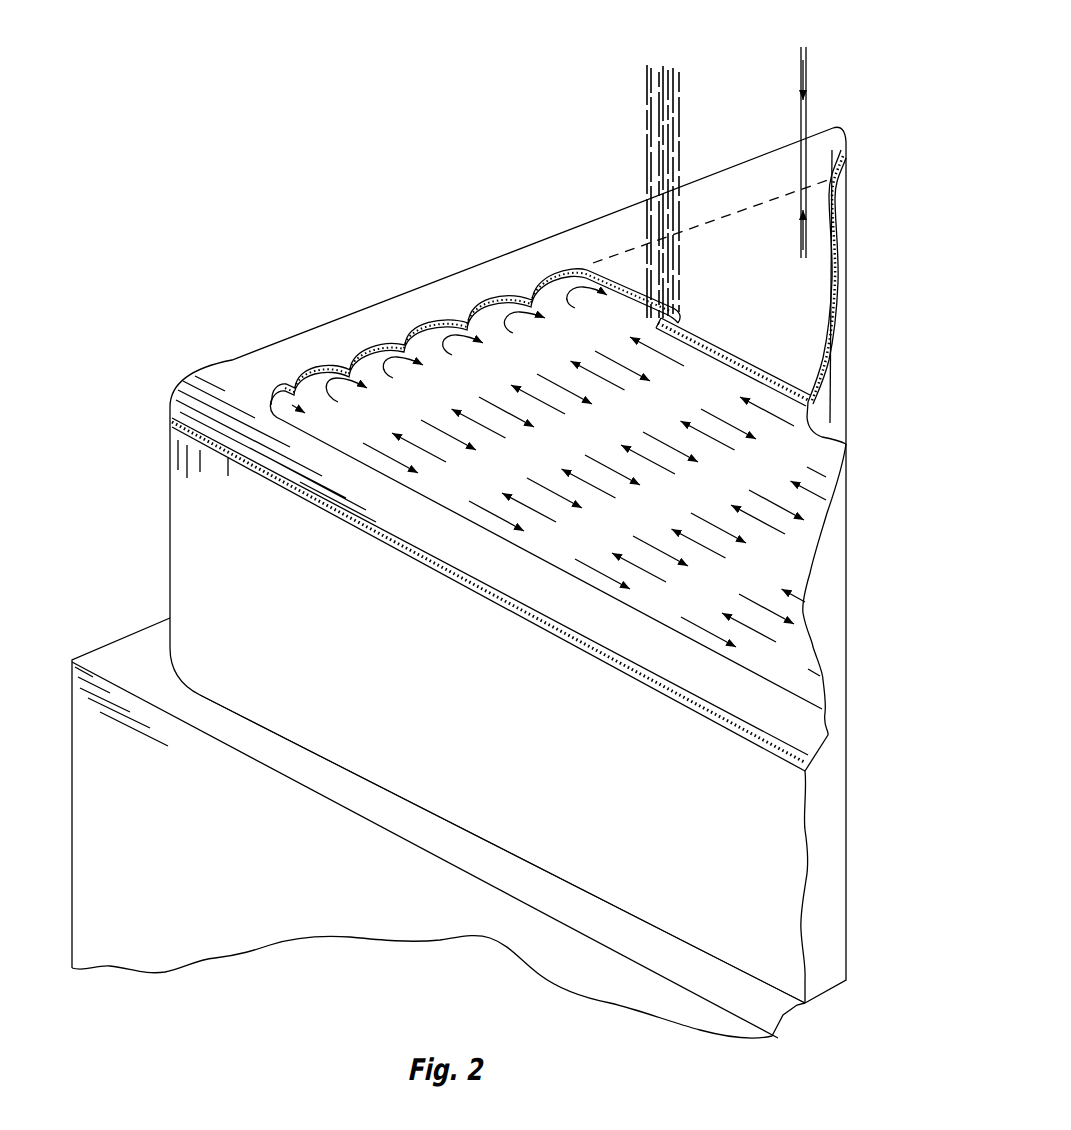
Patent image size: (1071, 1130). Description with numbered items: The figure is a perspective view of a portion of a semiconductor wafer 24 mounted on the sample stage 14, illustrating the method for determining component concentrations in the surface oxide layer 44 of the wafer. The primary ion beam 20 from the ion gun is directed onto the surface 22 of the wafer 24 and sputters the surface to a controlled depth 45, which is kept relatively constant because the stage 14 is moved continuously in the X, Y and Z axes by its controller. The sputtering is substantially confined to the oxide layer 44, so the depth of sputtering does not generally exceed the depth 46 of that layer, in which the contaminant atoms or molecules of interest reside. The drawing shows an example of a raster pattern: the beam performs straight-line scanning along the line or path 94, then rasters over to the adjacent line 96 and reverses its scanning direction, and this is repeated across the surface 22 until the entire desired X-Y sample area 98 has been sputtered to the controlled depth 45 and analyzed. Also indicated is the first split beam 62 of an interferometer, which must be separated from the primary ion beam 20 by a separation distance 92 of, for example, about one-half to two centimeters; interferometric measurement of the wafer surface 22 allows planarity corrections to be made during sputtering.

The sample stage 14 is at (179, 842).
The primary ion beam 20 is at (648, 147).
The surface 22 is at (262, 352).
The semiconductor wafer 24 is at (423, 672).
The surface oxide layer 44 is at (254, 471).
The controlled depth 45 is at (717, 292).
The depth of the surface oxide layer 46 is at (673, 657).
The first split beam 62 is at (800, 65).
The separation distance 92 is at (798, 118).
The scanning line 94 is at (383, 456).
The adjacent line 96 is at (752, 628).
The X-Y sample area 98 is at (768, 281).